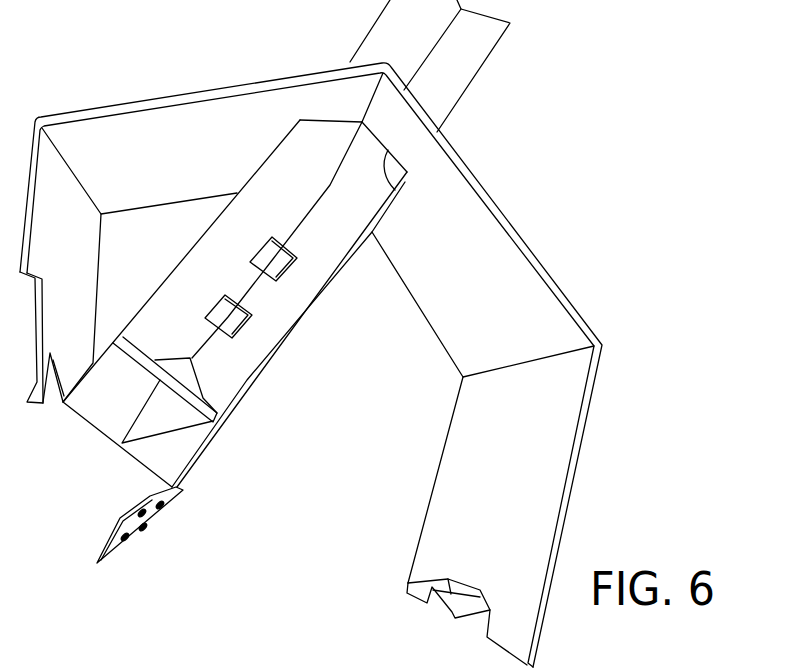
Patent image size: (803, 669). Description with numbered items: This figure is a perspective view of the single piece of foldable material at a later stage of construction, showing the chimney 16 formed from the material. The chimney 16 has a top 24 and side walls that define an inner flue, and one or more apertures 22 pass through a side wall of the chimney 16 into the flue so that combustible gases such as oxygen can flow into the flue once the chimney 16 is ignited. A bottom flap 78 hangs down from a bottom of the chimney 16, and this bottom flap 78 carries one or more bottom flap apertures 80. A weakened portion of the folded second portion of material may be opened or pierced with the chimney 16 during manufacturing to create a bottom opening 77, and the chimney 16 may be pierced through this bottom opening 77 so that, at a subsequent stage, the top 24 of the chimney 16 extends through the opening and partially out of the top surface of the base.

The chimney 16 is at (311, 365).
The apertures 22 is at (270, 240).
The top 24 is at (492, 84).
The bottom opening 77 is at (395, 190).
The bottom flap 78 is at (168, 529).
The bottom flap apertures 80 is at (128, 540).